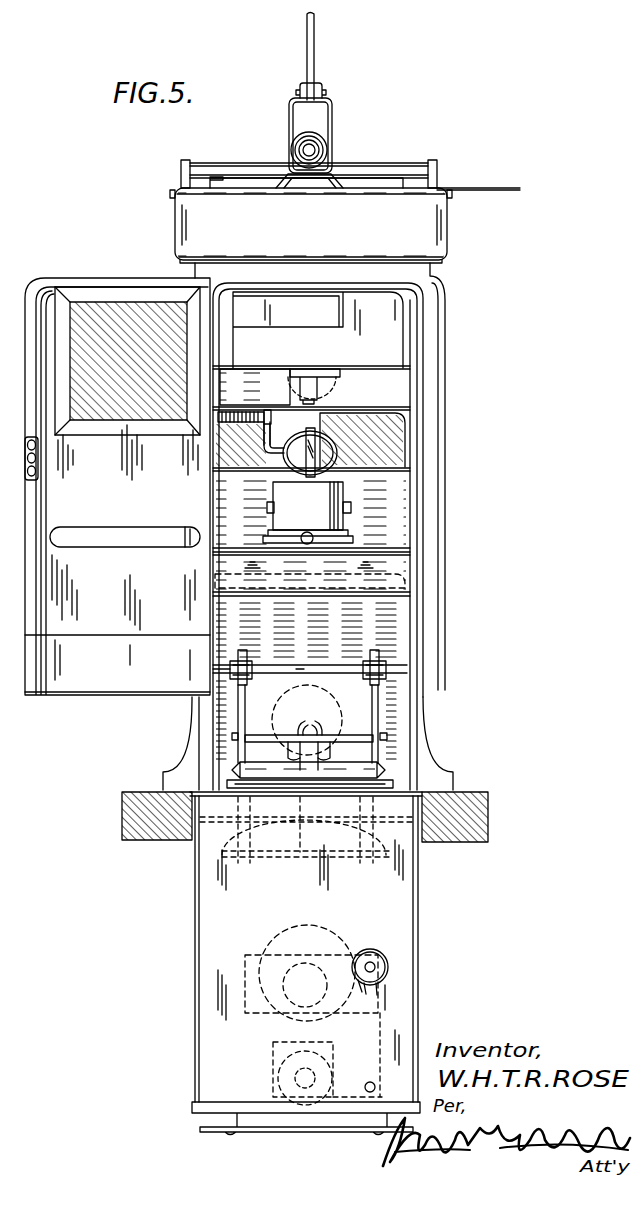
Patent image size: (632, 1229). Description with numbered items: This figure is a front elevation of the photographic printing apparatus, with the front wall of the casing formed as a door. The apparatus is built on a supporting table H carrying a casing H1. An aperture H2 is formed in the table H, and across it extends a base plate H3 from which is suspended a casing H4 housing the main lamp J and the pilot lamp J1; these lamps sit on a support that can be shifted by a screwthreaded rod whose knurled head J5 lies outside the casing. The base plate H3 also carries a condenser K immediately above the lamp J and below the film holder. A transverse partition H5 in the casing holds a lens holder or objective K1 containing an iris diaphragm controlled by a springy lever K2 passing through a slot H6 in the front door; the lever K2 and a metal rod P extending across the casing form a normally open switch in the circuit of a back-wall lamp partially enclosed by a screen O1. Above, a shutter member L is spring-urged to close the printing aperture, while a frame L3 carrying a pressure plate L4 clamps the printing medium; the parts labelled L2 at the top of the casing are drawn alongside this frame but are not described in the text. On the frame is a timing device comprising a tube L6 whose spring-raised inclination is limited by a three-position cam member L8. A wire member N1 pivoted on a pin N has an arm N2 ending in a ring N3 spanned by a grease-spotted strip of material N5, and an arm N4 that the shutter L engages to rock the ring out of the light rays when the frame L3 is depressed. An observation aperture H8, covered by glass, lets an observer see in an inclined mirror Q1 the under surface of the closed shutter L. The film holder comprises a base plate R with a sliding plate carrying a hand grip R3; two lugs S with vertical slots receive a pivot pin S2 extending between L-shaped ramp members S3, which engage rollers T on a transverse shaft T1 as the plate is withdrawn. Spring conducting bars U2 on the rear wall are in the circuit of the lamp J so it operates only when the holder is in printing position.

The cam member L8 is at (311, 48).
The tube L6 is at (317, 120).
The frame L3 is at (332, 136).
The pressure plate L4 is at (345, 180).
The posts L2 is at (185, 178).
The shutter member L is at (387, 312).
The casing H1 is at (91, 681).
The observation aperture H8 is at (105, 313).
The slot H6 is at (118, 541).
The arm N4 is at (223, 392).
The pin N is at (266, 440).
The screen O1 is at (320, 377).
The member N1 is at (220, 428).
The arm N2 is at (262, 441).
The strip of material N5 is at (284, 456).
The ring N3 is at (301, 462).
The inclined mirror Q1 is at (388, 445).
The lens holder or objective K1 is at (331, 495).
The lever K2 is at (355, 532).
The metal rod P is at (403, 552).
The transverse partition H5 is at (390, 583).
The rollers T is at (376, 657).
The transverse shaft T1 is at (300, 674).
The ramp members S3 is at (384, 710).
The pivot pin S2 is at (236, 739).
The lugs S is at (380, 737).
The hand grip R3 is at (372, 767).
The base plate R is at (234, 786).
The base plate H3 is at (190, 790).
The aperture H2 is at (176, 837).
The supporting table H is at (453, 831).
The casing H4 is at (210, 913).
The spring conducting bars U2 is at (308, 797).
The condenser K is at (347, 852).
The main lamp J is at (273, 943).
The knurled head J5 is at (388, 965).
The pilot lamp J1 is at (280, 1068).